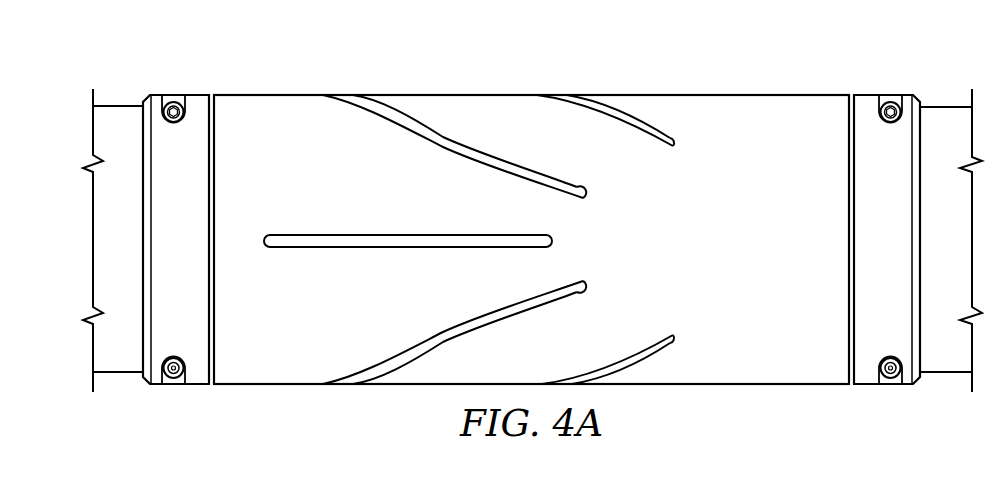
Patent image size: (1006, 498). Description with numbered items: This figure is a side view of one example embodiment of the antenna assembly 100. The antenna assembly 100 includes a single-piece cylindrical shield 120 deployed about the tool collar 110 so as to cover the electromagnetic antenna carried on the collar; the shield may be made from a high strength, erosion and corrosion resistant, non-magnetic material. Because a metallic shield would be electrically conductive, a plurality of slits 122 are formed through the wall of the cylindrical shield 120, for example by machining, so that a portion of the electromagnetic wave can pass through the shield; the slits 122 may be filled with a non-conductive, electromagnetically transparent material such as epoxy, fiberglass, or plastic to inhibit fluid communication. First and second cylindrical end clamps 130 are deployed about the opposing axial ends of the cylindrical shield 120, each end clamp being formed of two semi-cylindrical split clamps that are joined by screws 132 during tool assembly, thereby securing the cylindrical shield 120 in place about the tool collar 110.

The antenna assembly 100 is at (738, 61).
The tool collar 110 is at (118, 115).
The cylindrical shield 120 is at (453, 95).
The slits 122 is at (494, 158).
The cylindrical end clamps 130 is at (190, 95).
The screws 132 is at (176, 358).